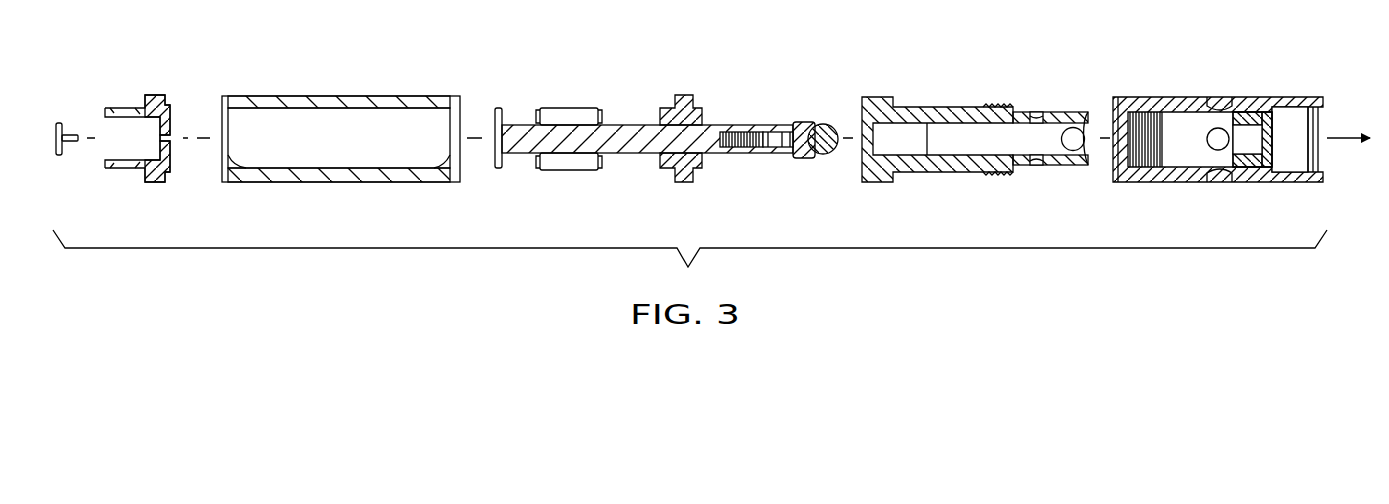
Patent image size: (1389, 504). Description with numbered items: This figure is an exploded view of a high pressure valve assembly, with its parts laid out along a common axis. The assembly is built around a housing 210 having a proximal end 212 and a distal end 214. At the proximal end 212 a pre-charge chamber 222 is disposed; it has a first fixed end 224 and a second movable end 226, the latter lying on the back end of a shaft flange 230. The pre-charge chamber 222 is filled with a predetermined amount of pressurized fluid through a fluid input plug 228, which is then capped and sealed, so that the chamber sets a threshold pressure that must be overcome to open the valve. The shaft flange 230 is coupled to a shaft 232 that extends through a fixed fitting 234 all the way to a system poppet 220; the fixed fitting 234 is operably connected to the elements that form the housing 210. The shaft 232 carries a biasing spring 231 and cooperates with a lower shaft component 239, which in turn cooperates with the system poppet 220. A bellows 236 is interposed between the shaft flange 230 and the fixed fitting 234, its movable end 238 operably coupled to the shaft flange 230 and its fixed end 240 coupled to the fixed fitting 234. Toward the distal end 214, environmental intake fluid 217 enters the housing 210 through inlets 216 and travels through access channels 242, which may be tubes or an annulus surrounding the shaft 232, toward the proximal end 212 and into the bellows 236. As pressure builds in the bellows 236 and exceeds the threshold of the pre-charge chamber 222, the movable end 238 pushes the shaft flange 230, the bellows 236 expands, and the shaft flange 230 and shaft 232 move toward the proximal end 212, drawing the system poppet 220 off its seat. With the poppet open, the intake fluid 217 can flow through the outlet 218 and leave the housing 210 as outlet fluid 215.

The housing 210 is at (240, 102).
The proximal end 212 is at (143, 187).
The distal end 214 is at (1308, 190).
The outlet fluid 215 is at (1338, 136).
The inlets 216 is at (1032, 117).
The environmental intake fluid 217 is at (1210, 82).
The outlet 218 is at (1257, 137).
The system poppet 220 is at (831, 153).
The pre-charge chamber 222 is at (309, 152).
The first fixed end 224 is at (246, 168).
The second movable end 226 is at (434, 168).
The fluid input plug 228 is at (58, 123).
The shaft flange 230 is at (498, 108).
The biasing spring 231 is at (733, 150).
The shaft 232 is at (635, 140).
The fixed fitting 234 is at (687, 95).
The bellows 236 is at (574, 118).
The movable end 238 is at (548, 168).
The lower shaft component 239 is at (799, 122).
The fixed end 240 is at (592, 168).
The access channels 242 is at (927, 127).